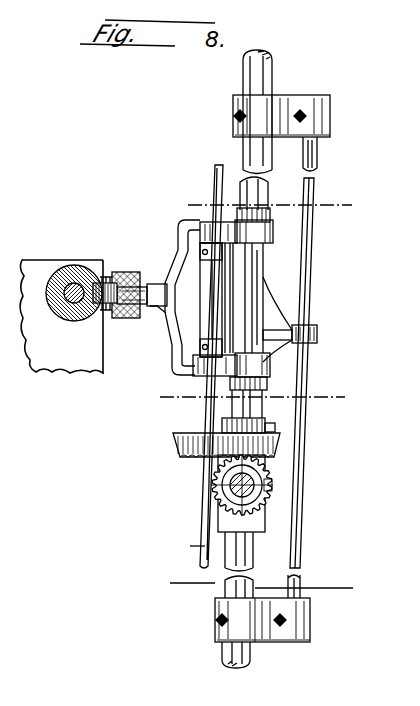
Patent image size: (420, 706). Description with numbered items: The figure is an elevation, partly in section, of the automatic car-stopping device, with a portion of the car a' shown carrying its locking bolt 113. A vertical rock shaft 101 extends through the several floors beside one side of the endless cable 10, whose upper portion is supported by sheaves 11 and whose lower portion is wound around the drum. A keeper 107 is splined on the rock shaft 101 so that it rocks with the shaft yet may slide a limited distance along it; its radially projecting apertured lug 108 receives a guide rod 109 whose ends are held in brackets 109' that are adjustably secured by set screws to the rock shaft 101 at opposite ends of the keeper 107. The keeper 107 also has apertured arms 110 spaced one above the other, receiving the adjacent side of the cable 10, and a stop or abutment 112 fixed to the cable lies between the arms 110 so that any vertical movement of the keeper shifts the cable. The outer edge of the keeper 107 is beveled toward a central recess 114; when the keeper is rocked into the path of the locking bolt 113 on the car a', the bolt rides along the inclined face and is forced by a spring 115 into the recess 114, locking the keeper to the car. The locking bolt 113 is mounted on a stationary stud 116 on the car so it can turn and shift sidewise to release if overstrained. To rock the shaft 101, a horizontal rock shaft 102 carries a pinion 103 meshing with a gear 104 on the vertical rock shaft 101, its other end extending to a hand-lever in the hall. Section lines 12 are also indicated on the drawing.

The vertical rock shaft 101 is at (266, 173).
The brackets 109' is at (297, 363).
The guide rod 109 is at (284, 367).
The endless cable 10 is at (268, 377).
The sheaves 11 is at (253, 398).
The section line 12- 12 is at (262, 586).
The apertured arms 110 is at (207, 222).
The stops or abutments 112 is at (210, 272).
The keeper 107 is at (173, 345).
The locking bolt 113 is at (147, 286).
The central recess 114 is at (158, 312).
The spring 115 is at (110, 270).
The stationary stud 116 is at (75, 283).
The car a' is at (61, 333).
The apertured lug 108 is at (317, 333).
The gear 104 is at (178, 438).
The horizontal rock shaft 102 is at (222, 487).
The pinion 103 is at (262, 468).